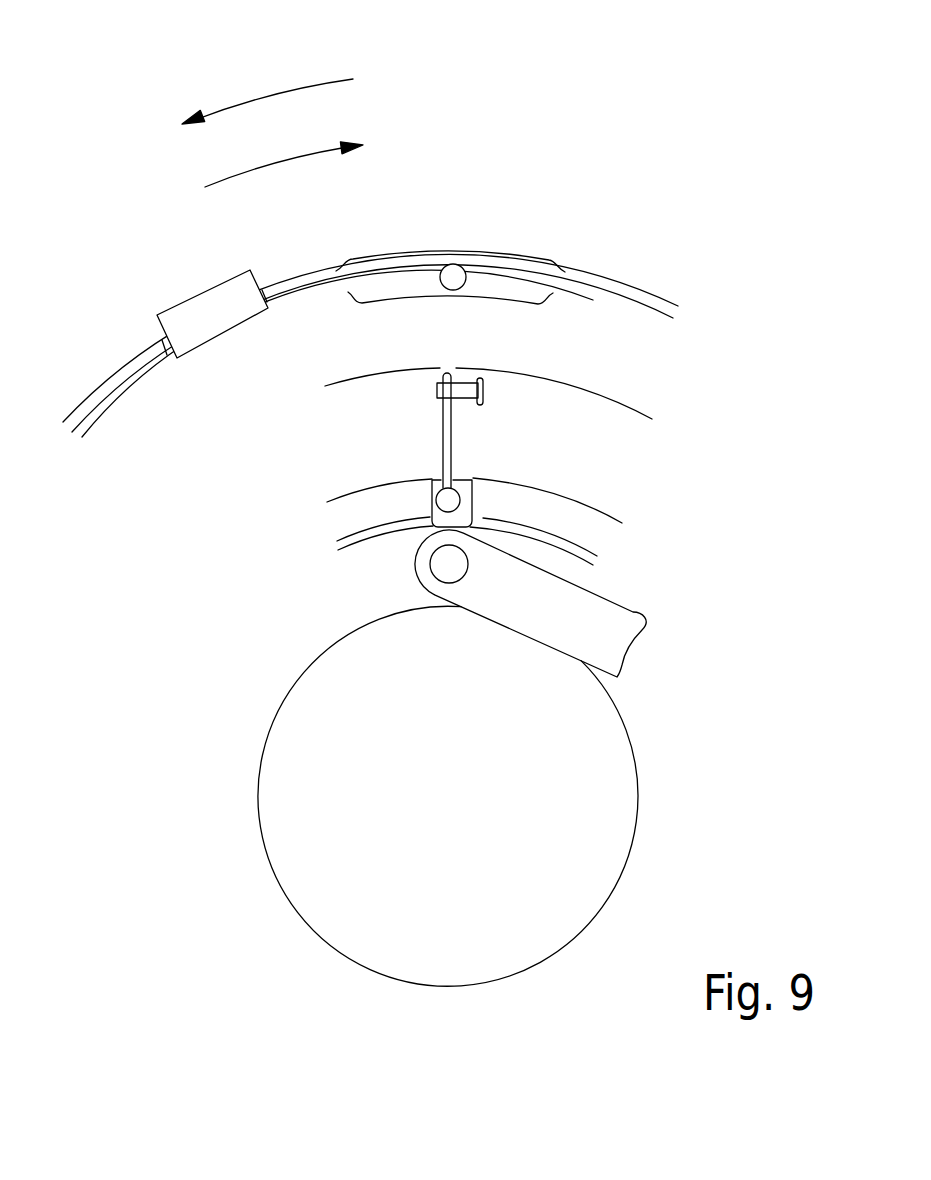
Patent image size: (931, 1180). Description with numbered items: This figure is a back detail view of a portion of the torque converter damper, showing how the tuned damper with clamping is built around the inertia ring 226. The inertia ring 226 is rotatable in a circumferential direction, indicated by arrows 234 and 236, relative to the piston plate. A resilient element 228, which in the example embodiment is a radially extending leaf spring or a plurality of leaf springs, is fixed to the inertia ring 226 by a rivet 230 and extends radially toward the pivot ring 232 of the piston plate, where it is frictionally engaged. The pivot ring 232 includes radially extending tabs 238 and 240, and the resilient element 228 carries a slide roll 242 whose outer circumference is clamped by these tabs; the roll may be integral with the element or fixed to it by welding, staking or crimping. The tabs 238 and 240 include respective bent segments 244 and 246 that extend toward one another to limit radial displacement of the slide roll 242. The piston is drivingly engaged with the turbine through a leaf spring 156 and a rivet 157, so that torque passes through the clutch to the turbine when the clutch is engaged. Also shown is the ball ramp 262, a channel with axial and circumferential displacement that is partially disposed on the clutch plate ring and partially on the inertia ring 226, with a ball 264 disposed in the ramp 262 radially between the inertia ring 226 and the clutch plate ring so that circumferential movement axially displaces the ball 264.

The leaf spring 156 is at (609, 626).
The rivet 157 is at (441, 571).
The inertia ring 226 is at (460, 329).
The resilient element 228 is at (452, 441).
The rivet 230 is at (483, 384).
The pivot ring 232 is at (584, 553).
The arrow 234 is at (293, 156).
The arrow 236 is at (272, 94).
The radially extending tab 238 is at (425, 502).
The radially extending tab 240 is at (473, 498).
The slide roll 242 is at (449, 499).
The bent segment 244 is at (417, 479).
The bent segment 246 is at (474, 478).
The ball ramp 262 is at (510, 264).
The ball 264 is at (453, 277).